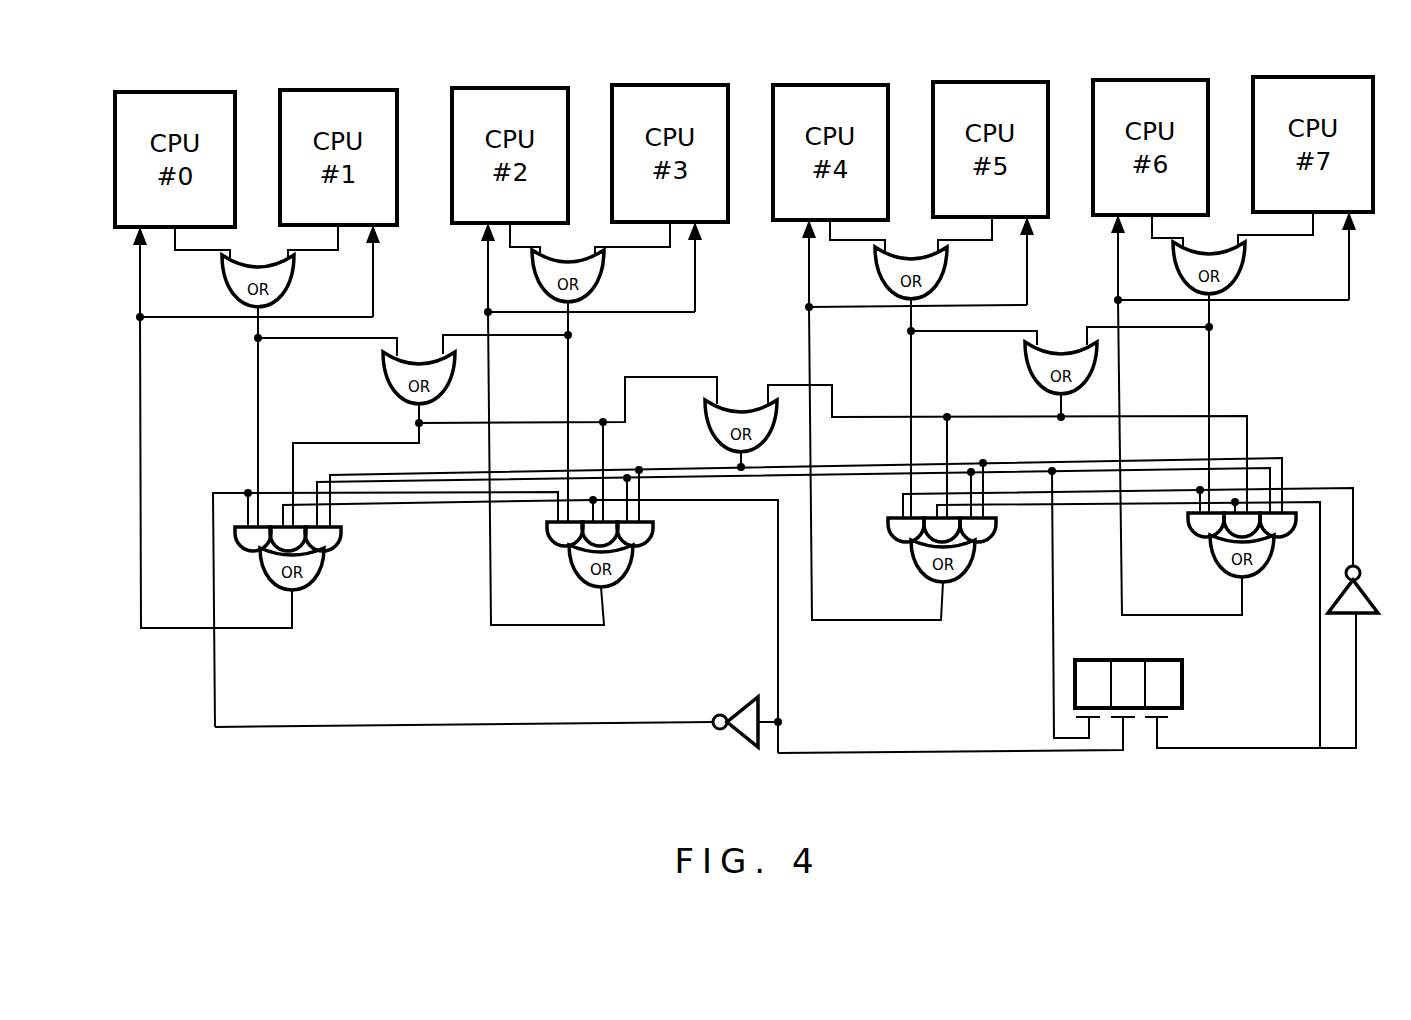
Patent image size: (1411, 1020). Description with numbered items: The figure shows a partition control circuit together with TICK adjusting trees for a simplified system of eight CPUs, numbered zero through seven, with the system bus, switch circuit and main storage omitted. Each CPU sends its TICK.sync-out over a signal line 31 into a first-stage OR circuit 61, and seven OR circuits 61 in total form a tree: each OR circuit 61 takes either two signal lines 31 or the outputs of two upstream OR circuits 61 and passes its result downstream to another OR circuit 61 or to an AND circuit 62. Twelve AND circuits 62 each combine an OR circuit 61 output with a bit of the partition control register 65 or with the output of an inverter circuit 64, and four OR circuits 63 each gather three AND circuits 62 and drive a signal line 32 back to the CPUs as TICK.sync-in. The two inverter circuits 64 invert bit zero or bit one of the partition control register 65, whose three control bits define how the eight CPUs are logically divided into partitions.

The signal line 31 is at (750, 254).
The signal line 32 is at (756, 266).
The OR circuit 61 is at (756, 347).
The AND circuit 62 is at (759, 520).
The OR circuit 63 is at (784, 578).
The inverter circuit 64 is at (1045, 647).
The partition control register 65 is at (1184, 690).